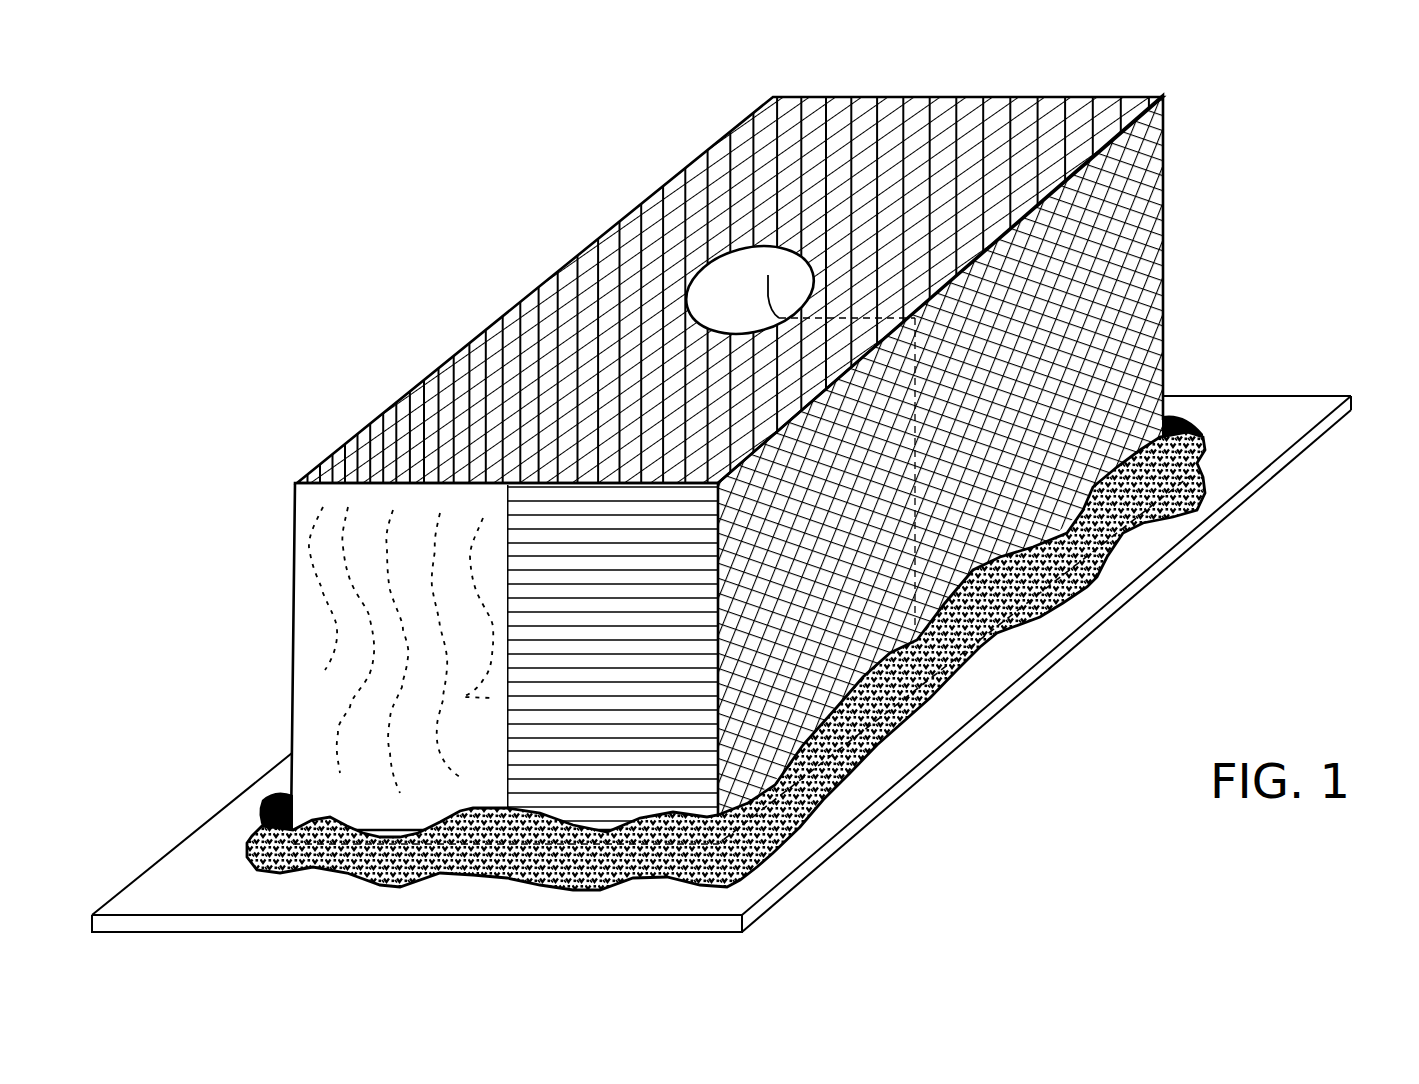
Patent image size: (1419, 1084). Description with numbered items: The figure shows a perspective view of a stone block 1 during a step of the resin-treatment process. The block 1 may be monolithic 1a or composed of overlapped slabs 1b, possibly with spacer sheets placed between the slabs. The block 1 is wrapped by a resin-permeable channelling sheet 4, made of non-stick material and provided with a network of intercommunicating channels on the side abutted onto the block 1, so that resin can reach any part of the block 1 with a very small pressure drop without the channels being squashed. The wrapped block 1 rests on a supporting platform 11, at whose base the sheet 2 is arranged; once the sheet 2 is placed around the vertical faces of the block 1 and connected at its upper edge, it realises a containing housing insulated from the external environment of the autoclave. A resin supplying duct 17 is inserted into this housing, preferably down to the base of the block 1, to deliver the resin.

The block 1 is at (701, 516).
The monolithic block 1a is at (400, 645).
The overlapped slabs 1b is at (605, 698).
The sheet 2 is at (880, 710).
The channelling sheet 4 is at (1037, 453).
The supporting platform 11 is at (1270, 454).
The resin supplying duct 17 is at (767, 296).